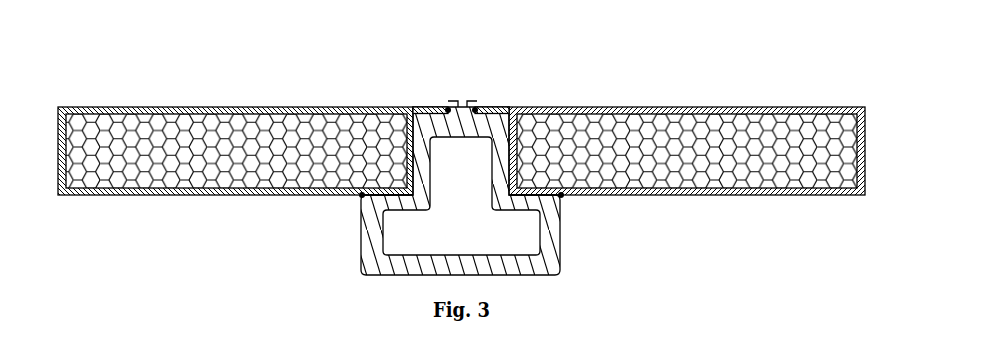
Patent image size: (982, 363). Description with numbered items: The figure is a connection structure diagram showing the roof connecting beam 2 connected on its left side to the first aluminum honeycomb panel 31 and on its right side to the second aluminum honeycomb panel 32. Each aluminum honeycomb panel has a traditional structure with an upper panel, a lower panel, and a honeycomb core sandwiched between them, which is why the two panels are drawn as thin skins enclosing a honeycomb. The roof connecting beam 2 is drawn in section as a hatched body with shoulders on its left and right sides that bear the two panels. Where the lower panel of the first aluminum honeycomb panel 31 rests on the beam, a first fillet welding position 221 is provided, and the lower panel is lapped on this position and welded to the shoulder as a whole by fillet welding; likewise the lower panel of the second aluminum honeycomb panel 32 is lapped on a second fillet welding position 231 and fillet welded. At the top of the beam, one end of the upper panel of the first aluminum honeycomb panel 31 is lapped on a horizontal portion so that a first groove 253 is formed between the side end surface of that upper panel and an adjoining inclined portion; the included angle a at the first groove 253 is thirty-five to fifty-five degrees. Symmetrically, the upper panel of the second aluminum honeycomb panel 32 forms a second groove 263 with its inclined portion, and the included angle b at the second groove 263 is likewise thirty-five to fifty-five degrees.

The roof connecting beam 2 is at (548, 237).
The first aluminum honeycomb panel 31 is at (253, 148).
The second aluminum honeycomb panel 32 is at (658, 150).
The first fillet welding position 221 is at (362, 195).
The second fillet welding position 231 is at (561, 195).
The first groove 253 is at (448, 110).
The second groove 263 is at (475, 110).
The included angle at the first groove a is at (450, 103).
The included angle at the second groove b is at (469, 103).